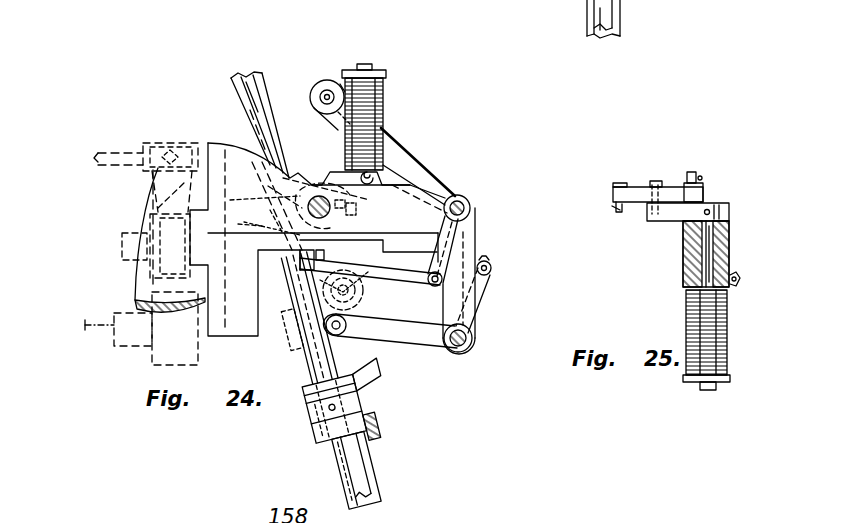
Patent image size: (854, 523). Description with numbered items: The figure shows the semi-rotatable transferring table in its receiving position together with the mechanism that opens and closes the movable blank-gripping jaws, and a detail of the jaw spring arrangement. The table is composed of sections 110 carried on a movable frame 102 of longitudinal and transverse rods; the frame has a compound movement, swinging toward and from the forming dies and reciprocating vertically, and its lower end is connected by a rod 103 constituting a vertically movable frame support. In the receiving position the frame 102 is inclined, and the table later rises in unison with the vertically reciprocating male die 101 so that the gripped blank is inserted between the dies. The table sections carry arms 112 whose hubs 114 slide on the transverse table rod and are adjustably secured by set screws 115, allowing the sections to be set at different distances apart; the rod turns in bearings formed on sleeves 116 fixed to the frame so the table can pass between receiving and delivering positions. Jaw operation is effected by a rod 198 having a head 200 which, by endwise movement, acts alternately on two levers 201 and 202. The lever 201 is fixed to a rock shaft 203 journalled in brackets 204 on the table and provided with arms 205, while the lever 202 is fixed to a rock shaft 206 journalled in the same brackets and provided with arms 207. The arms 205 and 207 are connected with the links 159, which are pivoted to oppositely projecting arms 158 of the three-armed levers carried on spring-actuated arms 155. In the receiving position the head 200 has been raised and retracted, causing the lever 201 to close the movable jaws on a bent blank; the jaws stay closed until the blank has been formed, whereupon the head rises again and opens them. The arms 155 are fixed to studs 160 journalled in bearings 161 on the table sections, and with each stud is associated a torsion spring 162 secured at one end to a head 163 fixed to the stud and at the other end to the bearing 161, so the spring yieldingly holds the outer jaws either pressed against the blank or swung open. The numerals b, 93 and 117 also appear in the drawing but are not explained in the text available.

In FIG. 24, the machine frame part b is at (140, 294).
In FIG. 24, the slide member 93 is at (315, 372).
In FIG. 25, the slide member 93 is at (621, 25).
In FIG. 24, the male die 101 is at (361, 209).
In FIG. 24, the frame 102 is at (310, 372).
In FIG. 24, the rod 103 is at (318, 196).
In FIG. 24, the table sections 110 is at (216, 148).
In FIG. 24, the arms 112 is at (420, 187).
In FIG. 24, the hubs 114 is at (270, 195).
In FIG. 24, the set screws 115 is at (402, 162).
In FIG. 24, the sleeves 116 is at (255, 204).
In FIG. 24, the guide 117 is at (237, 222).
In FIG. 25, the spring-actuated arms 155 is at (672, 212).
In FIG. 25, the arms 158 is at (638, 195).
In FIG. 24, the rods 159 is at (436, 250).
In FIG. 25, the rods 159 is at (702, 182).
In FIG. 25, the studs 160 is at (716, 244).
In FIG. 25, the bearings 161 is at (735, 268).
In FIG. 24, the torsion spring 162 is at (386, 96).
In FIG. 25, the torsion spring 162 is at (724, 326).
In FIG. 25, the head 163 is at (688, 380).
In FIG. 24, the rod 198 is at (362, 470).
In FIG. 25, the rod 198 is at (587, 8).
In FIG. 24, the head 200 is at (362, 398).
In FIG. 24, the lever 201 is at (414, 342).
In FIG. 24, the lever 202 is at (387, 138).
In FIG. 24, the rock shaft 203 is at (470, 348).
In FIG. 24, the brackets 204 is at (458, 290).
In FIG. 24, the arms 205 is at (482, 305).
In FIG. 24, the rock shaft 206 is at (471, 209).
In FIG. 24, the arms 207 is at (458, 246).